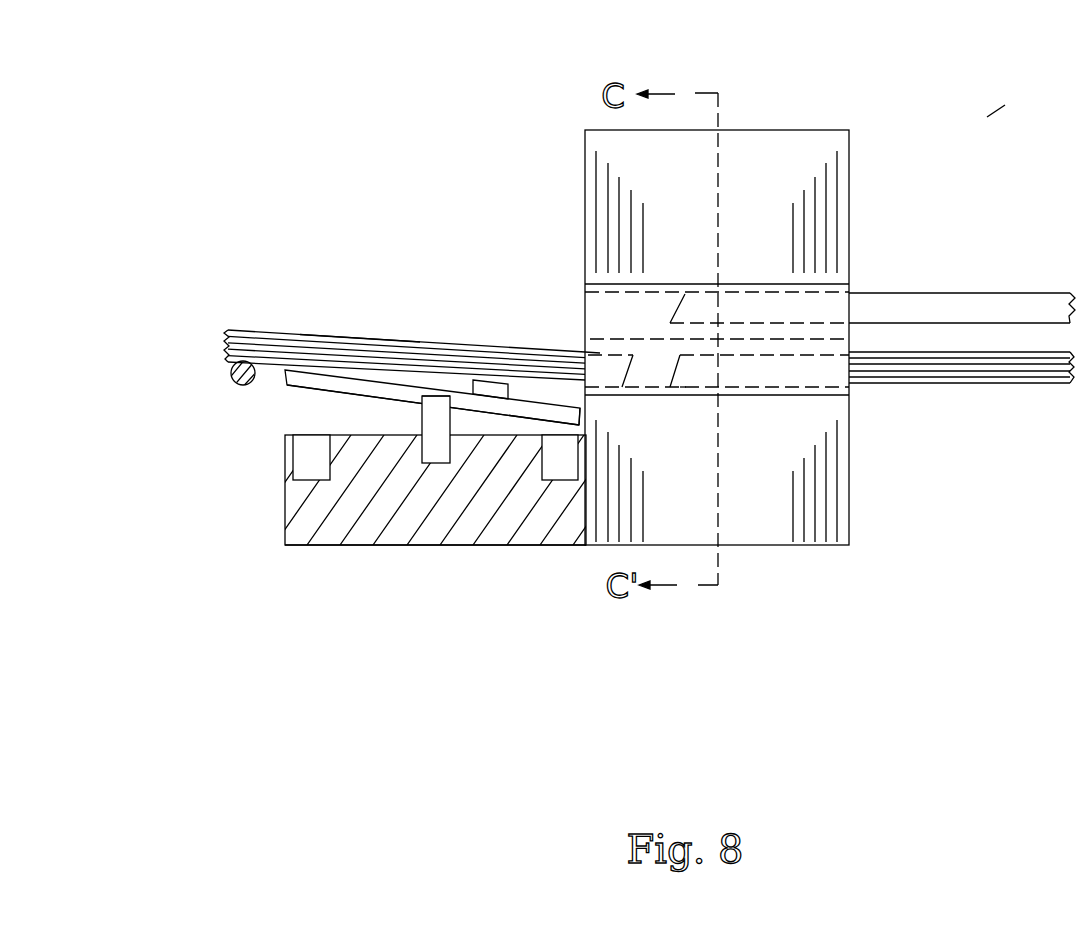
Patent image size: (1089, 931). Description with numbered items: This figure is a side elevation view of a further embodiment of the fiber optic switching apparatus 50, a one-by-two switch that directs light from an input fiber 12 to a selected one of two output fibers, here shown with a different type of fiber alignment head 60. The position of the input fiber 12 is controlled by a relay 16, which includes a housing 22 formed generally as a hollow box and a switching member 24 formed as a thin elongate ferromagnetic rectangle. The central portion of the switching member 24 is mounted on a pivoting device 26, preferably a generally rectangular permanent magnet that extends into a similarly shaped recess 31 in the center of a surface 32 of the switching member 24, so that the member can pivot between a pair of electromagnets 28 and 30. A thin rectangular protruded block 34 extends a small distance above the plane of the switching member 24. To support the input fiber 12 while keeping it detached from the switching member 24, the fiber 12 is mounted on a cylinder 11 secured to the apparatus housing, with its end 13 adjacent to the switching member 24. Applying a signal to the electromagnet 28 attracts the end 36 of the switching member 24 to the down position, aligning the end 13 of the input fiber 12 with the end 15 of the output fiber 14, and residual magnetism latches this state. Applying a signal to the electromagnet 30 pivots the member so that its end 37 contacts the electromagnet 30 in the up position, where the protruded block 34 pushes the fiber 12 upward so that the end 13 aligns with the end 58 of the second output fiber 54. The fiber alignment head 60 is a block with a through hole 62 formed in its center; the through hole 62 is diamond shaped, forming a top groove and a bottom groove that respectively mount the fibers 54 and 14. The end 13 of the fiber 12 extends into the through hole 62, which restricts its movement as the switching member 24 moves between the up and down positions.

The cylinder 11 is at (230, 370).
The input fiber 12 is at (238, 328).
The end of input fiber 13 is at (613, 352).
The output fiber 14 is at (938, 384).
The end of output fiber 15 is at (683, 388).
The relay 16 is at (325, 547).
The housing 22 is at (285, 500).
The switching member 24 is at (362, 340).
The pivoting device 26 is at (437, 463).
The electromagnet 28 is at (553, 480).
The electromagnet 30 is at (292, 445).
The recess 31 is at (423, 393).
The surface of switching member 32 is at (502, 414).
The protruded block 34 is at (478, 382).
The end of switching member 36 is at (572, 405).
The end of switching member 37 is at (291, 372).
The fiber optic switching apparatus 50 is at (985, 118).
The second output fiber 54 is at (1008, 291).
The end of second output fiber 58 is at (685, 294).
The fiber alignment head 60 is at (585, 170).
The through hole 62 is at (646, 395).